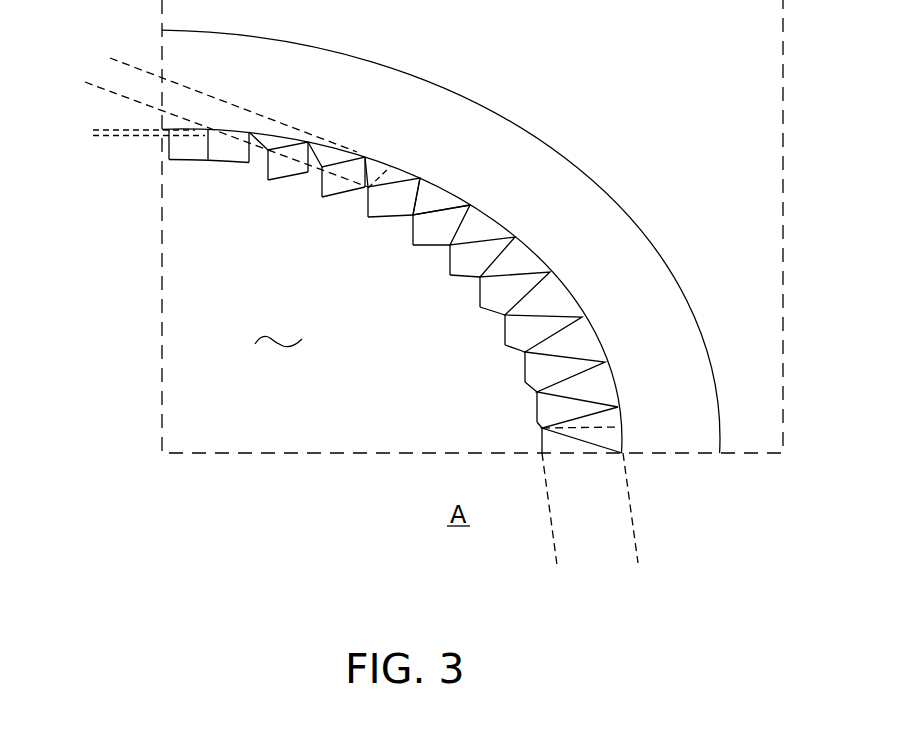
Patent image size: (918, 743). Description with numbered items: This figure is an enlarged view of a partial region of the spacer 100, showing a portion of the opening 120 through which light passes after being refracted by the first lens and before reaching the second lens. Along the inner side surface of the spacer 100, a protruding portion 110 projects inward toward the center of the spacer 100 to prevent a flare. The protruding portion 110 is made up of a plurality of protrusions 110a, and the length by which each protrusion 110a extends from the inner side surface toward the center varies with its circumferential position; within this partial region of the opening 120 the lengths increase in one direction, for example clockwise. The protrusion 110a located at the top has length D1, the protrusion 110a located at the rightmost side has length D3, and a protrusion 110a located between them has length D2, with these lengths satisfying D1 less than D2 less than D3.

The spacer 100 is at (493, 137).
The protruding portion 110 is at (490, 228).
The protrusions 110a is at (414, 222).
The opening 120 is at (282, 345).
The length of the protrusion located at the top D1 is at (98, 103).
The length of the protrusion located therebetween D2 is at (108, 59).
The length of the protrusion located at the rightmost side D3 is at (635, 547).